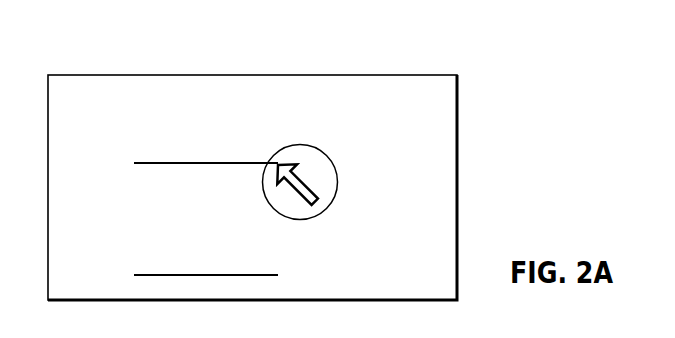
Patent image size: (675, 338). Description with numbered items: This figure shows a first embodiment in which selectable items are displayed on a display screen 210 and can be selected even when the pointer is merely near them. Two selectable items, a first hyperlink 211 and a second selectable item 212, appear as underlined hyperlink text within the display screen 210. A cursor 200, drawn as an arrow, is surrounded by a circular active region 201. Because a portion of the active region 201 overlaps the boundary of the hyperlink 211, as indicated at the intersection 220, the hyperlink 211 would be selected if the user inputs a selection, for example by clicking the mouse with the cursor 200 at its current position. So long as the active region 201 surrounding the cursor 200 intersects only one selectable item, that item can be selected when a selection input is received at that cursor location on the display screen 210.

The display screen 210 is at (383, 75).
The hyperlink 211 is at (137, 127).
The selectable item 212 is at (137, 240).
The intersection 220 is at (276, 156).
The cursor 200 is at (317, 191).
The active region 201 is at (320, 163).